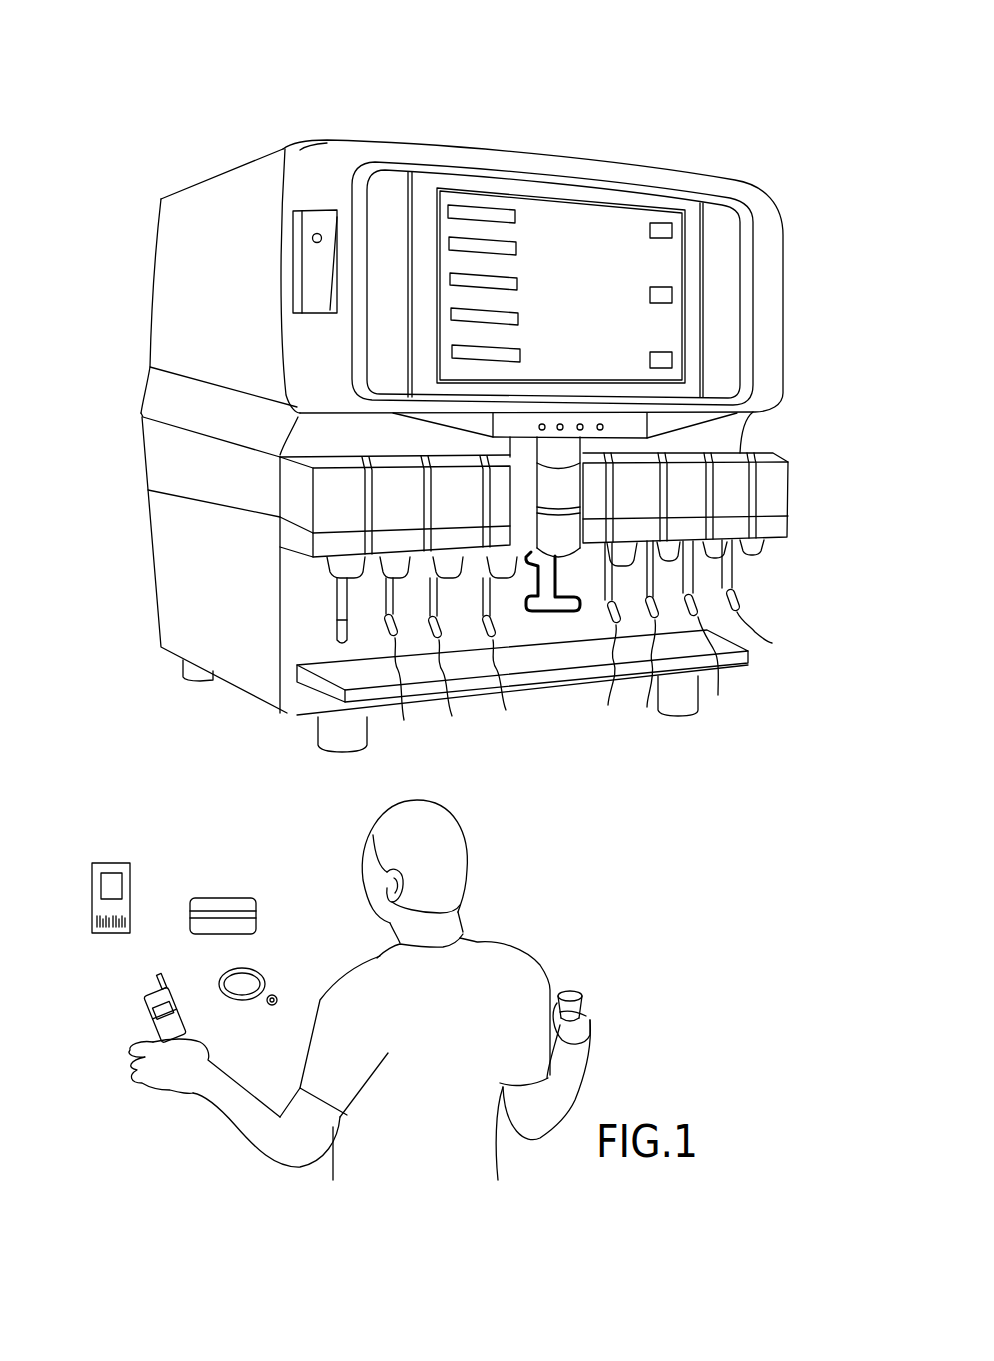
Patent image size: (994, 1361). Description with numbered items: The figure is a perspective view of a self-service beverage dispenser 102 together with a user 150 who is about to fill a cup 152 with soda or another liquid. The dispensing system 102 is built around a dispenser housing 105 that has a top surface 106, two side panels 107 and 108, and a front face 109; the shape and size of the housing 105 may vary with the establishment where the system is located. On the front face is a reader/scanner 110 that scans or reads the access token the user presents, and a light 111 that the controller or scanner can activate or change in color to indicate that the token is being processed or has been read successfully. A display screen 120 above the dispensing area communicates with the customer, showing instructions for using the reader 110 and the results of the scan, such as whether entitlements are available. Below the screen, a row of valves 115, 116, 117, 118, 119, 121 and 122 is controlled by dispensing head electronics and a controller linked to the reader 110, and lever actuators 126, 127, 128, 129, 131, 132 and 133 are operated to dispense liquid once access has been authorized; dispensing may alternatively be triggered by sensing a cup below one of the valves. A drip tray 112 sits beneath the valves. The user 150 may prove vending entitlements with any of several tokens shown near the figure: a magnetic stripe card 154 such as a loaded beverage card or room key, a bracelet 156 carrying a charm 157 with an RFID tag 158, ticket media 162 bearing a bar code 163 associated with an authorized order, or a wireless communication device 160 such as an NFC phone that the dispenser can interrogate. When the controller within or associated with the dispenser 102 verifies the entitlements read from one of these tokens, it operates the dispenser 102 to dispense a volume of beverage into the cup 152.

The self-service beverage dispenser 102 is at (316, 75).
The dispenser housing 105 is at (143, 420).
The top surface 106 is at (251, 171).
The side panel 107 is at (156, 595).
The side panel 108 is at (786, 286).
The front face 109 is at (342, 152).
The reader/scanner 110 is at (281, 273).
The light 111 is at (311, 238).
The drip tray 112 is at (285, 706).
The valve 115 is at (328, 577).
The valve 116 is at (401, 580).
The valve 117 is at (447, 580).
The valve 118 is at (500, 580).
The valve 119 is at (612, 563).
The display screen 120 is at (570, 200).
The valve 121 is at (717, 568).
The valve 122 is at (754, 555).
The lever actuator 126 is at (337, 632).
The lever actuator 127 is at (408, 692).
The lever actuator 128 is at (454, 693).
The lever actuator 129 is at (555, 683).
The lever actuator 131 is at (643, 671).
The lever actuator 132 is at (717, 670).
The lever actuator 133 is at (765, 627).
The user 150 is at (240, 1100).
The cup 152 is at (592, 1003).
The magnetic stripe card 154 is at (258, 906).
The bracelet 156 is at (255, 968).
The charm 157 is at (278, 997).
The RFID tag 158 is at (275, 1005).
The wireless communication device 160 is at (142, 1005).
The ticket media 162 is at (133, 876).
The bar code 163 is at (128, 923).